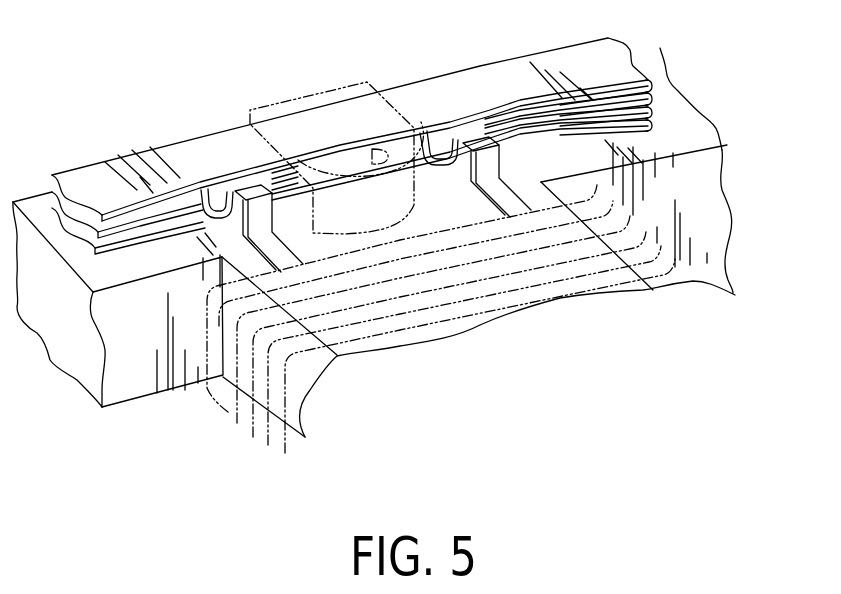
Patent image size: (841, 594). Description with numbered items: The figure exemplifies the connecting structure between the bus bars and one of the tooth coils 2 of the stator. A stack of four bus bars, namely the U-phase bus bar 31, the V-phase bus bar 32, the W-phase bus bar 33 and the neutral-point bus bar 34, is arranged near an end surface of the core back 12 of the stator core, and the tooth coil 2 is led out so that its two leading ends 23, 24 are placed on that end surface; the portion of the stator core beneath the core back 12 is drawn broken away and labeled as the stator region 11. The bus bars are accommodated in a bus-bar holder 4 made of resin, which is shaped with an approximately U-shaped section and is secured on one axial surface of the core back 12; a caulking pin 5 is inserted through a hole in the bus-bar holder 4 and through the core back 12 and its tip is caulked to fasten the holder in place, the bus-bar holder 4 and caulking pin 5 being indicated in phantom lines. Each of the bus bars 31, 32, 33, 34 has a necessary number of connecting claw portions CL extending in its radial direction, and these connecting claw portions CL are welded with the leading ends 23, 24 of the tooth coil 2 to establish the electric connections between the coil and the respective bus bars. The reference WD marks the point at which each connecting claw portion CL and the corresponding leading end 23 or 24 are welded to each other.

The tooth coil 2 is at (279, 439).
The bus-bar holder 4 is at (322, 97).
The caulking pin 5 is at (368, 142).
The connection structure 11 is at (223, 419).
The core back 12 is at (125, 370).
The leading end 23 is at (285, 242).
The leading end 24 is at (489, 198).
The U-phase bus bar 31 is at (352, 129).
The V-phase bus bar 32 is at (352, 165).
The W-phase bus bar 33 is at (352, 180).
The neutral-point bus bar 34 is at (657, 126).
The connecting claw portion CL is at (220, 214).
The welding point WD is at (252, 195).